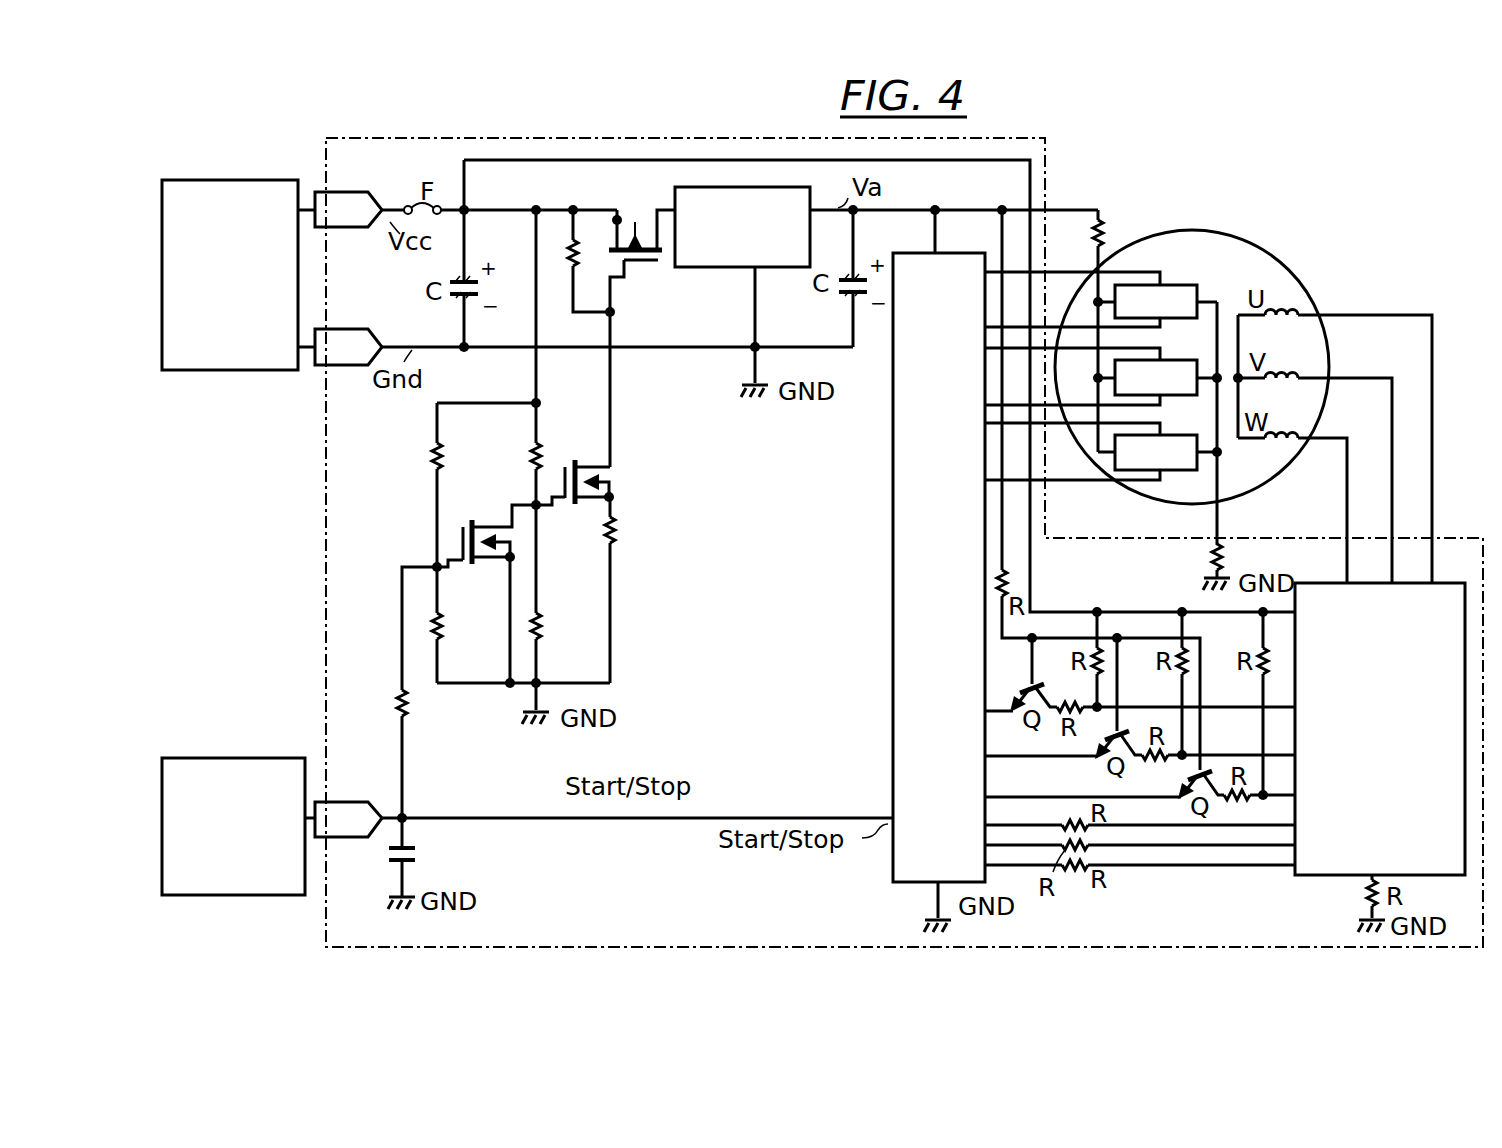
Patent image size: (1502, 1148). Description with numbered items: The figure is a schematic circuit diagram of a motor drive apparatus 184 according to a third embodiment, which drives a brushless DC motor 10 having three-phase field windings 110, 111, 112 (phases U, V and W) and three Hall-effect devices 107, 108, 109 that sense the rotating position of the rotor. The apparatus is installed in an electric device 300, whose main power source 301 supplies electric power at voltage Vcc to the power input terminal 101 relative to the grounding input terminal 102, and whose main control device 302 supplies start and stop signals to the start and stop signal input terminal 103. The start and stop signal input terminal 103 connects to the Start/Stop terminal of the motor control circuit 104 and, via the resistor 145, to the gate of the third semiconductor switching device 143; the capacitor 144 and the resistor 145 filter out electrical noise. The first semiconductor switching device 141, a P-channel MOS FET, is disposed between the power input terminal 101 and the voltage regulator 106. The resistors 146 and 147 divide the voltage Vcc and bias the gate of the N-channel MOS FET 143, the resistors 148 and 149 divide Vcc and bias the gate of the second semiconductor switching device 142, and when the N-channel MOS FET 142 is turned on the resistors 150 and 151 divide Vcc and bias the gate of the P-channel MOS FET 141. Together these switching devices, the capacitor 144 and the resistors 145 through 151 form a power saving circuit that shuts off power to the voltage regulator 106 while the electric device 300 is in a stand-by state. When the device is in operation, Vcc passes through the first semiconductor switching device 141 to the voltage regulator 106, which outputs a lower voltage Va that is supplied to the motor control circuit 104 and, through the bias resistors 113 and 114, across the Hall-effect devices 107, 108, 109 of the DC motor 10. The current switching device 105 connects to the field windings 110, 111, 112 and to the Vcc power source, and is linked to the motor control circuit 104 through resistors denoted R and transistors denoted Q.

The electric device 300 is at (246, 146).
The main power source 301 is at (197, 372).
The main control device 302 is at (207, 897).
The power input terminal 101 is at (350, 190).
The grounding input terminal 102 is at (345, 328).
The start and stop signal input terminal 103 is at (337, 840).
The motor control circuit 104 is at (889, 505).
The current switching device 105 is at (1328, 878).
The voltage regulator 106 is at (712, 270).
The Hall-effect device 107 is at (1168, 283).
The Hall-effect device 108 is at (1200, 368).
The Hall-effect device 109 is at (1178, 477).
The DC motor 10 is at (1295, 262).
The field winding 110 is at (1300, 318).
The field winding 111 is at (1302, 372).
The field winding 112 is at (1302, 432).
The bias resistor 113 is at (1104, 222).
The bias resistor 114 is at (1204, 560).
The first semiconductor switching device 141 is at (640, 208).
The second semiconductor switching device 142 is at (602, 482).
The third semiconductor switching device 143 is at (486, 518).
The capacitor 144 is at (420, 853).
The resistor 145 is at (392, 702).
The resistor 146 is at (430, 460).
The resistor 147 is at (445, 632).
The resistor 148 is at (542, 440).
The resistor 149 is at (545, 624).
The resistor 150 is at (563, 272).
The resistor 151 is at (616, 538).
The motor drive apparatus 184 is at (1048, 152).